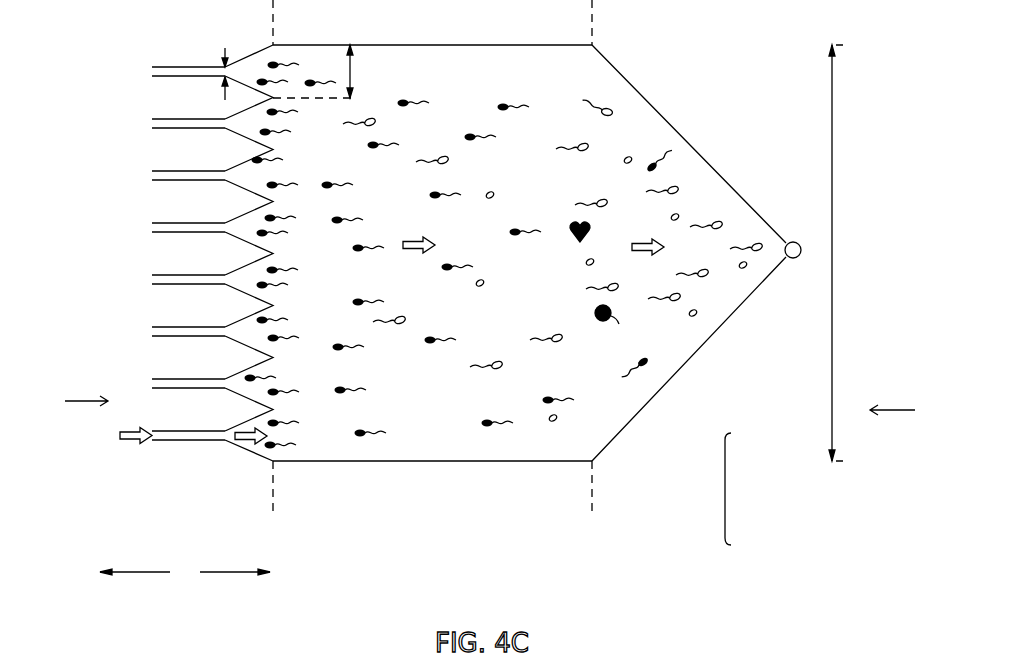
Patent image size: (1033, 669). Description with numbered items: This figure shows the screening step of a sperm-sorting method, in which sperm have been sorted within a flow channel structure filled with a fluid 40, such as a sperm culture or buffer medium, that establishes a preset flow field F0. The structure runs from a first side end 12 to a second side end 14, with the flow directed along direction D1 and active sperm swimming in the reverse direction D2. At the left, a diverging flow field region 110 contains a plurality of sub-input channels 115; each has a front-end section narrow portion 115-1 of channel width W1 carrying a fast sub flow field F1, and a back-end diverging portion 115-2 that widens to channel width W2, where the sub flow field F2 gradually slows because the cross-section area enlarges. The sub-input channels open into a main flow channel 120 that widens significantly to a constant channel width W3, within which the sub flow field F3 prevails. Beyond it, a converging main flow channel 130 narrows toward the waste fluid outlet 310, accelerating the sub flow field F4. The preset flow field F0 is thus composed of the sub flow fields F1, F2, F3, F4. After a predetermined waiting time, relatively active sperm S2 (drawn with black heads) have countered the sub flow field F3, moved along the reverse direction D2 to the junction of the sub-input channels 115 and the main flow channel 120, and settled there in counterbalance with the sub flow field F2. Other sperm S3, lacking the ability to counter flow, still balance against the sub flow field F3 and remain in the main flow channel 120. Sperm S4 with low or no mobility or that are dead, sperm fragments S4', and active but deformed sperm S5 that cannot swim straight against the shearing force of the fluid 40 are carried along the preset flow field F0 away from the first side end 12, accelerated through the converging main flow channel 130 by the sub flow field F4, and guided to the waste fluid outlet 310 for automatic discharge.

The diverging flow field region 110 is at (150, 31).
The main flow channel 120 is at (428, 31).
The converging main flow channel 130 is at (705, 257).
The fluid 40 is at (645, 122).
The waste fluid outlet 310 is at (796, 242).
The sub-input channels 115 is at (153, 253).
The front-end section narrow portion 115-1 is at (163, 223).
The back-end diverging portion 115-2 is at (178, 197).
The first side end 12 is at (71, 402).
The second side end 14 is at (907, 411).
The channel width W1 is at (235, 53).
The channel width W2 is at (334, 71).
The constant channel width W3 is at (854, 253).
The direction D1 is at (235, 560).
The reverse direction D2 is at (135, 560).
The sub flow field F1 is at (130, 441).
The sub flow field F2 is at (246, 442).
The sub flow field F3 is at (415, 253).
The sub flow field F4 is at (638, 255).
The preset flow field F0 is at (734, 489).
The sperm S2 is at (245, 382).
The sperm S3 is at (377, 437).
The sperm S4 is at (734, 304).
The sperm fragments S4' is at (736, 351).
The sperm S5 is at (603, 322).